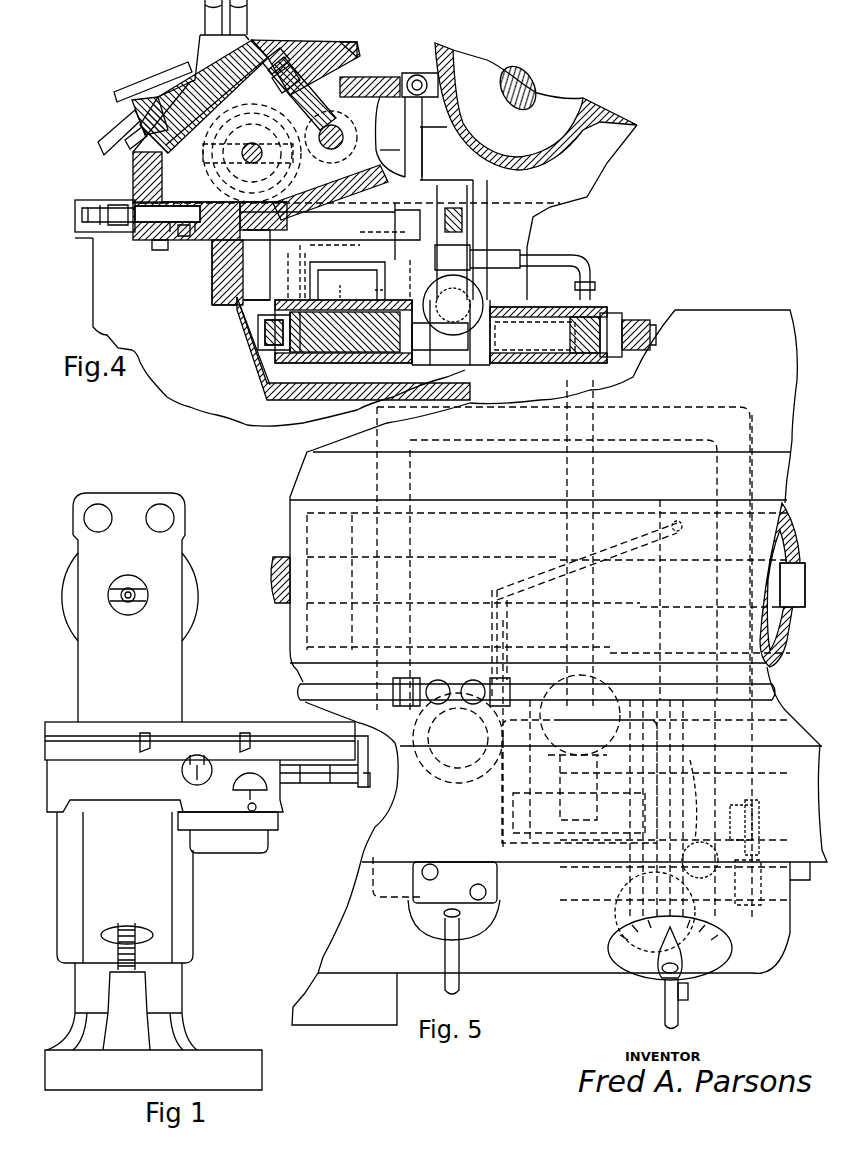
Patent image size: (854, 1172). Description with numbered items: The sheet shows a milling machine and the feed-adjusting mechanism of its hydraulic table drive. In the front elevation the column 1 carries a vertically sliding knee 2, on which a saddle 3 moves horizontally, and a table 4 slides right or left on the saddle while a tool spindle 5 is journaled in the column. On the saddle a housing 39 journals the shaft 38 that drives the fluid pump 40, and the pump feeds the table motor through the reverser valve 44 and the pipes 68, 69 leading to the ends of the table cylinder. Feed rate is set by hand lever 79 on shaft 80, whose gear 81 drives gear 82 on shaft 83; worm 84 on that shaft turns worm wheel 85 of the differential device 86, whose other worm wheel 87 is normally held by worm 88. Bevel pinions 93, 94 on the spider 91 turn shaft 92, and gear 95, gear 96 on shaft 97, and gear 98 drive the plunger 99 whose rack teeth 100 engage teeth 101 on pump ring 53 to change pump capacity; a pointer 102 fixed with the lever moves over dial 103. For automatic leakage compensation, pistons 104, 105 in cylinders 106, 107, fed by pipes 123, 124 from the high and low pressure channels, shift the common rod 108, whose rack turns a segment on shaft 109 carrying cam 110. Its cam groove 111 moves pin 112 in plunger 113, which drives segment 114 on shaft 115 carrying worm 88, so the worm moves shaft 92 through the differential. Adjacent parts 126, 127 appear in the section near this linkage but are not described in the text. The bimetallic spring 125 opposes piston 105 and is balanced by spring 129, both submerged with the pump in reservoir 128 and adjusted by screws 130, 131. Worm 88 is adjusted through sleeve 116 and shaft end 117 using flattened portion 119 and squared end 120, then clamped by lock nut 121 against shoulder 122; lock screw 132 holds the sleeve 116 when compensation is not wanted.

In FIG. 1, the column 1 is at (182, 676).
In FIG. 1, the knee 2 is at (193, 908).
In FIG. 4, the saddle 3 is at (312, 44).
In FIG. 1, the saddle 3 is at (282, 808).
In FIG. 1, the table 4 is at (210, 722).
In FIG. 1, the tool spindle 5 is at (132, 615).
In FIG. 5, the shaft 38 is at (570, 498).
In FIG. 4, the housing 39 is at (214, 278).
In FIG. 1, the housing 39 is at (278, 832).
In FIG. 4, the fluid pump 40 is at (358, 272).
In FIG. 5, the fluid pump 40 is at (546, 772).
In FIG. 5, the reverser valve 44 is at (465, 760).
In FIG. 4, the pump ring 53 is at (322, 248).
In FIG. 5, the pipe 68 is at (775, 695).
In FIG. 5, the pipe 69 is at (300, 690).
In FIG. 4, the hand lever 79 is at (100, 150).
In FIG. 5, the hand lever 79 is at (688, 995).
In FIG. 4, the shaft 80 is at (150, 133).
In FIG. 5, the shaft 80 is at (662, 980).
In FIG. 4, the gear 81 is at (180, 148).
In FIG. 5, the gear 81 is at (640, 910).
In FIG. 4, the gear 82 is at (204, 96).
In FIG. 5, the gear 82 is at (705, 900).
In FIG. 4, the shaft 83 is at (296, 72).
In FIG. 5, the shaft 83 is at (752, 830).
In FIG. 4, the worm 84 is at (310, 84).
In FIG. 5, the worm 84 is at (750, 800).
In FIG. 4, the worm wheel 85 is at (282, 79).
In FIG. 5, the worm wheel 85 is at (748, 905).
In FIG. 4, the differential device 86 is at (176, 238).
In FIG. 4, the worm wheel 87 is at (198, 238).
In FIG. 4, the worm 88 is at (218, 250).
In FIG. 4, the spider 91 is at (235, 162).
In FIG. 4, the shaft 92 is at (254, 165).
In FIG. 4, the bevel pinion 93 is at (252, 153).
In FIG. 4, the bevel pinion 94 is at (252, 153).
In FIG. 4, the gear 95 is at (300, 162).
In FIG. 4, the gear 96 is at (380, 160).
In FIG. 4, the shaft 97 is at (331, 136).
In FIG. 4, the gear 98 is at (399, 137).
In FIG. 4, the plunger 99 is at (291, 272).
In FIG. 4, the rack teeth 100 is at (297, 276).
In FIG. 4, the teeth 101 is at (330, 235).
In FIG. 4, the pointer 102 is at (182, 76).
In FIG. 5, the pointer 102 is at (660, 958).
In FIG. 4, the dial 103 is at (135, 140).
In FIG. 5, the dial 103 is at (610, 950).
In FIG. 4, the piston 104 is at (548, 346).
In FIG. 4, the piston 105 is at (343, 342).
In FIG. 4, the cylinder 106 is at (573, 352).
In FIG. 4, the cylinder 107 is at (380, 363).
In FIG. 4, the common rod 108 is at (478, 365).
In FIG. 4, the shaft 109 is at (440, 346).
In FIG. 4, the cam 110 is at (484, 300).
In FIG. 4, the cam groove 111 is at (461, 303).
In FIG. 4, the pin 112 is at (470, 260).
In FIG. 4, the plunger 113 is at (473, 236).
In FIG. 4, the segment 114 is at (450, 207).
In FIG. 4, the shaft 115 is at (365, 236).
In FIG. 4, the sleeve 116 is at (188, 245).
In FIG. 4, the shaft end 117 is at (145, 240).
In FIG. 4, the flattened portion 119 is at (122, 240).
In FIG. 4, the squared end 120 is at (88, 228).
In FIG. 4, the lock nut 121 is at (102, 238).
In FIG. 4, the shoulder 122 is at (258, 265).
In FIG. 4, the pipe 123 is at (582, 257).
In FIG. 5, the pipe 123 is at (505, 585).
In FIG. 4, the pipe 124 is at (382, 262).
In FIG. 5, the pipe 124 is at (700, 760).
In FIG. 4, the spring 125 is at (320, 363).
In FIG. 4, the member 126 is at (353, 289).
In FIG. 4, the member 127 is at (376, 295).
In FIG. 4, the reservoir 128 is at (258, 328).
In FIG. 4, the spring 129 is at (598, 363).
In FIG. 4, the screw 130 is at (258, 360).
In FIG. 4, the screw 131 is at (645, 330).
In FIG. 4, the lock screw 132 is at (160, 250).